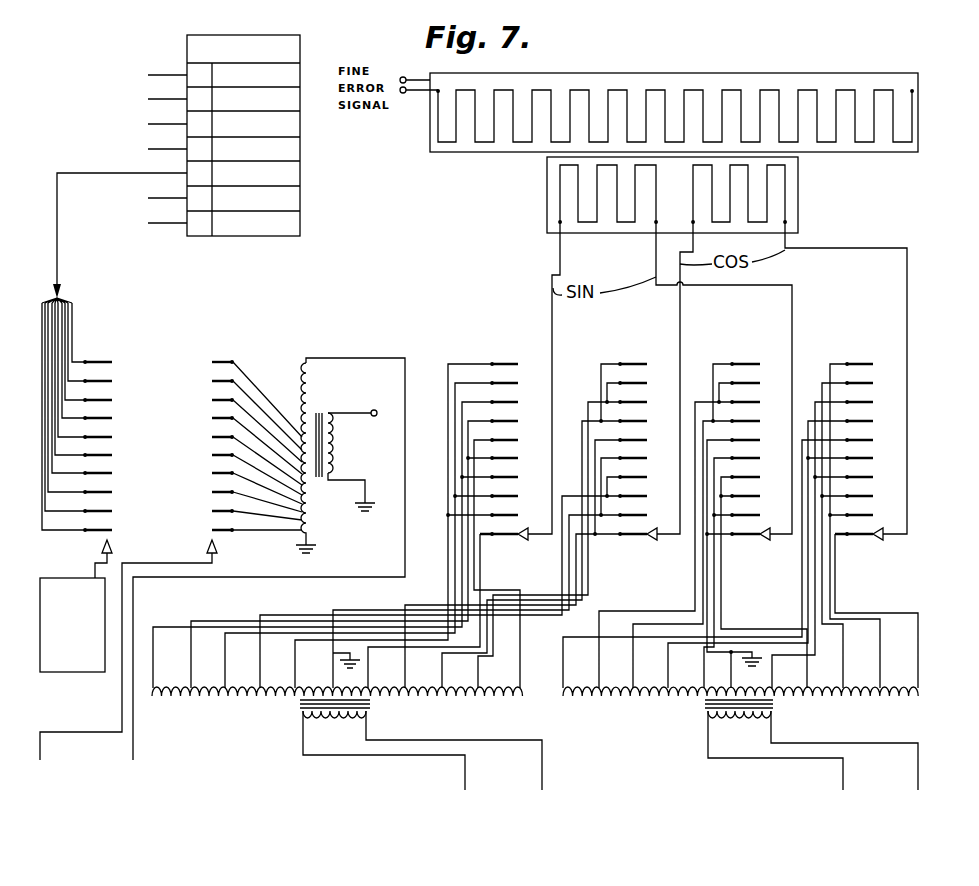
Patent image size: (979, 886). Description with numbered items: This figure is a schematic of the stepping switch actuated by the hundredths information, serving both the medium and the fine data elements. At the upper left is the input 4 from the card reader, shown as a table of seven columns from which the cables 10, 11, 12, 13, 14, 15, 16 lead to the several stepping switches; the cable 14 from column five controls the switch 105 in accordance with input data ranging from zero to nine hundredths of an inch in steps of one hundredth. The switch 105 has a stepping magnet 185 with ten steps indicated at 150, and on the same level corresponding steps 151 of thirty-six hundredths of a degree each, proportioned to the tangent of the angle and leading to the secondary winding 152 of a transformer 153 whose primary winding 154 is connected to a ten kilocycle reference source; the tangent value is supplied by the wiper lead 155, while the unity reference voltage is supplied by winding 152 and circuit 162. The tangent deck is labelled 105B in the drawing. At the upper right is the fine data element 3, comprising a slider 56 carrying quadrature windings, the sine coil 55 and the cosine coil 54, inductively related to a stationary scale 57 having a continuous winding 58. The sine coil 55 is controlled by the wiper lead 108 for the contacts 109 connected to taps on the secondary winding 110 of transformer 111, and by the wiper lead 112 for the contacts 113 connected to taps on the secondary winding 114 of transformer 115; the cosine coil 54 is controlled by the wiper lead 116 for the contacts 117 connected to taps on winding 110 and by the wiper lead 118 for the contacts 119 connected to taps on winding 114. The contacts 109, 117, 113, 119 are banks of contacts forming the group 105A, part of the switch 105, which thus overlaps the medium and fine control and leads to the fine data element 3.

The fine data element 3 is at (672, 111).
The input from the card reader 4 is at (263, 35).
The cable 10 is at (119, 68).
The cable 11 is at (119, 92).
The cable 12 is at (119, 117).
The cable 13 is at (119, 142).
The cable 14 is at (27, 396).
The cable 15 is at (126, 191).
The cable 16 is at (126, 216).
The cosine coil 54 is at (790, 186).
The sine coil 55 is at (558, 225).
The slider 56 is at (540, 186).
The stationary scale 57 is at (536, 73).
The continuous winding 58 is at (454, 148).
The stepping switch 105 is at (269, 535).
The switch contacts 105A is at (740, 455).
The tangent switch deck 105B is at (171, 540).
The wiper lead 108 is at (519, 540).
The contacts 109 is at (499, 364).
The secondary winding 110 is at (445, 697).
The transformer 111 is at (292, 707).
The wiper lead 112 is at (768, 540).
The contacts 113 is at (744, 364).
The secondary winding 114 is at (630, 697).
The transformer 115 is at (700, 716).
The wiper lead 116 is at (654, 540).
The contacts 117 is at (626, 364).
The wiper lead 118 is at (883, 540).
The contacts 119 is at (852, 364).
The steps 150 is at (98, 362).
The steps 151 is at (237, 362).
The secondary winding 152 is at (300, 372).
The transformer 153 is at (326, 410).
The primary winding 154 is at (324, 489).
The wiper lead 155 is at (201, 563).
The circuit 162 is at (375, 358).
The stepping magnet 185 is at (72, 625).